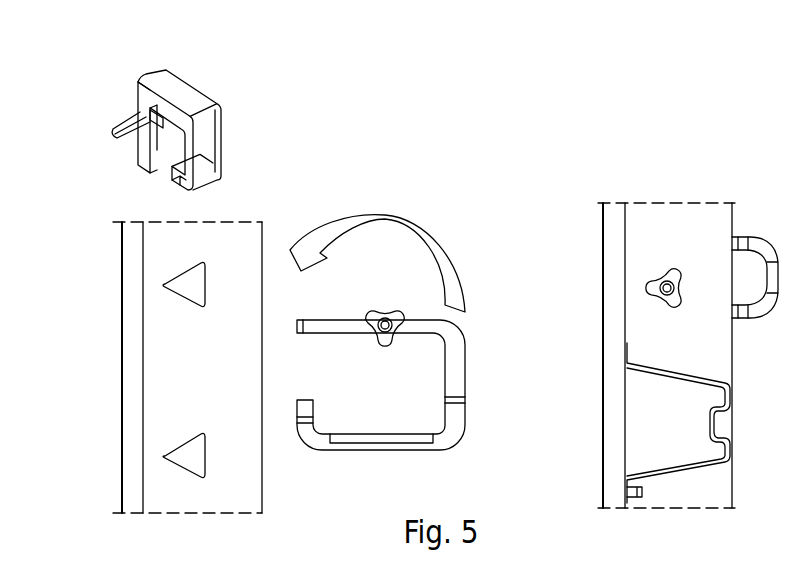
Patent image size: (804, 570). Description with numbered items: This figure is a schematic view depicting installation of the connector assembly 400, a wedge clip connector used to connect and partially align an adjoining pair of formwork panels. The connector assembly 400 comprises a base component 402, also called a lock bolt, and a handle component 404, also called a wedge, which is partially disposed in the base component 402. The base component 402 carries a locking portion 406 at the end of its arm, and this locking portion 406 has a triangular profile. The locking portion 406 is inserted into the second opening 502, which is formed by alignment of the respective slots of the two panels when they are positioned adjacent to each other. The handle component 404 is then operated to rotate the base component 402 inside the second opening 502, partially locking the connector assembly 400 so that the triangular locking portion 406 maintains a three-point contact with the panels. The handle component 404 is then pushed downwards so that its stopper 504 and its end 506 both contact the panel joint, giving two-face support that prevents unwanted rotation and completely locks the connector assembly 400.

The connector assembly 400 is at (374, 192).
The base component 402 is at (130, 101).
The handle component 404 is at (181, 69).
The locking portion 406 is at (120, 108).
The second opening 502 is at (204, 262).
The stopper 504 is at (178, 107).
The end of the handle component 506 is at (172, 184).